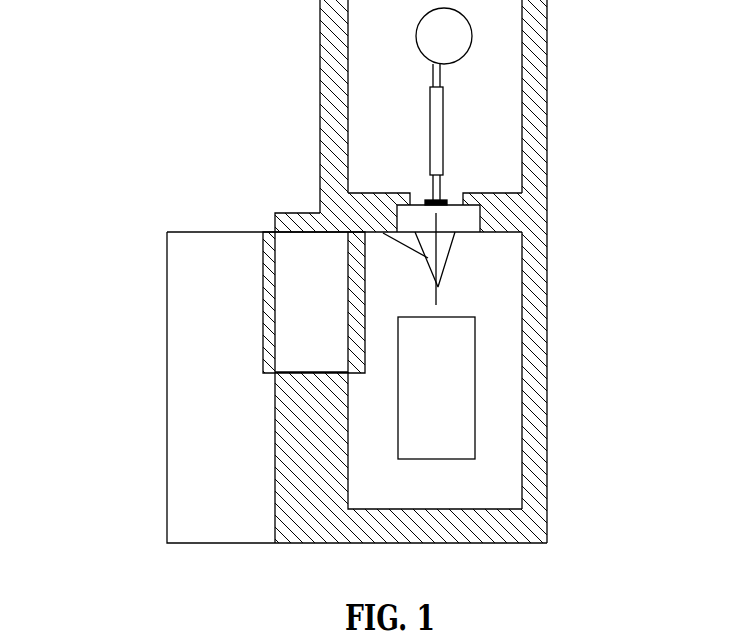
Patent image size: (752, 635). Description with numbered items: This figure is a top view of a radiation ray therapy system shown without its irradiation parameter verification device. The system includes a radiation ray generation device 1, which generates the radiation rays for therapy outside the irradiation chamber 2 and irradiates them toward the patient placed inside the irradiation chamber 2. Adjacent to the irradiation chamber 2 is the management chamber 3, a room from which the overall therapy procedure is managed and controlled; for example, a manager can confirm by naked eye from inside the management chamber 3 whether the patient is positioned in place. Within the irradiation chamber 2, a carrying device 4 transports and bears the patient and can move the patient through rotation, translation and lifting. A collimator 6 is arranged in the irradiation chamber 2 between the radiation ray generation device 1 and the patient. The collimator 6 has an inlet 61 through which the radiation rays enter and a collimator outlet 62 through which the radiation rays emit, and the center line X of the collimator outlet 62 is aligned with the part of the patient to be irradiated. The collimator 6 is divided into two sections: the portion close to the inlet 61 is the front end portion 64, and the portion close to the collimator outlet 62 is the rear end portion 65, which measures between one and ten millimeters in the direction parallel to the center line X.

The radiation ray generation device 1 is at (544, 106).
The irradiation chamber 2 is at (474, 457).
The management chamber 3 is at (296, 387).
The carrying device 4 is at (539, 400).
The collimator 6 is at (289, 276).
The inlet 61 is at (514, 202).
The collimator outlet 62 is at (548, 297).
The front end portion 64 is at (559, 249).
The rear end portion 65 is at (560, 288).
The center line X is at (324, 193).